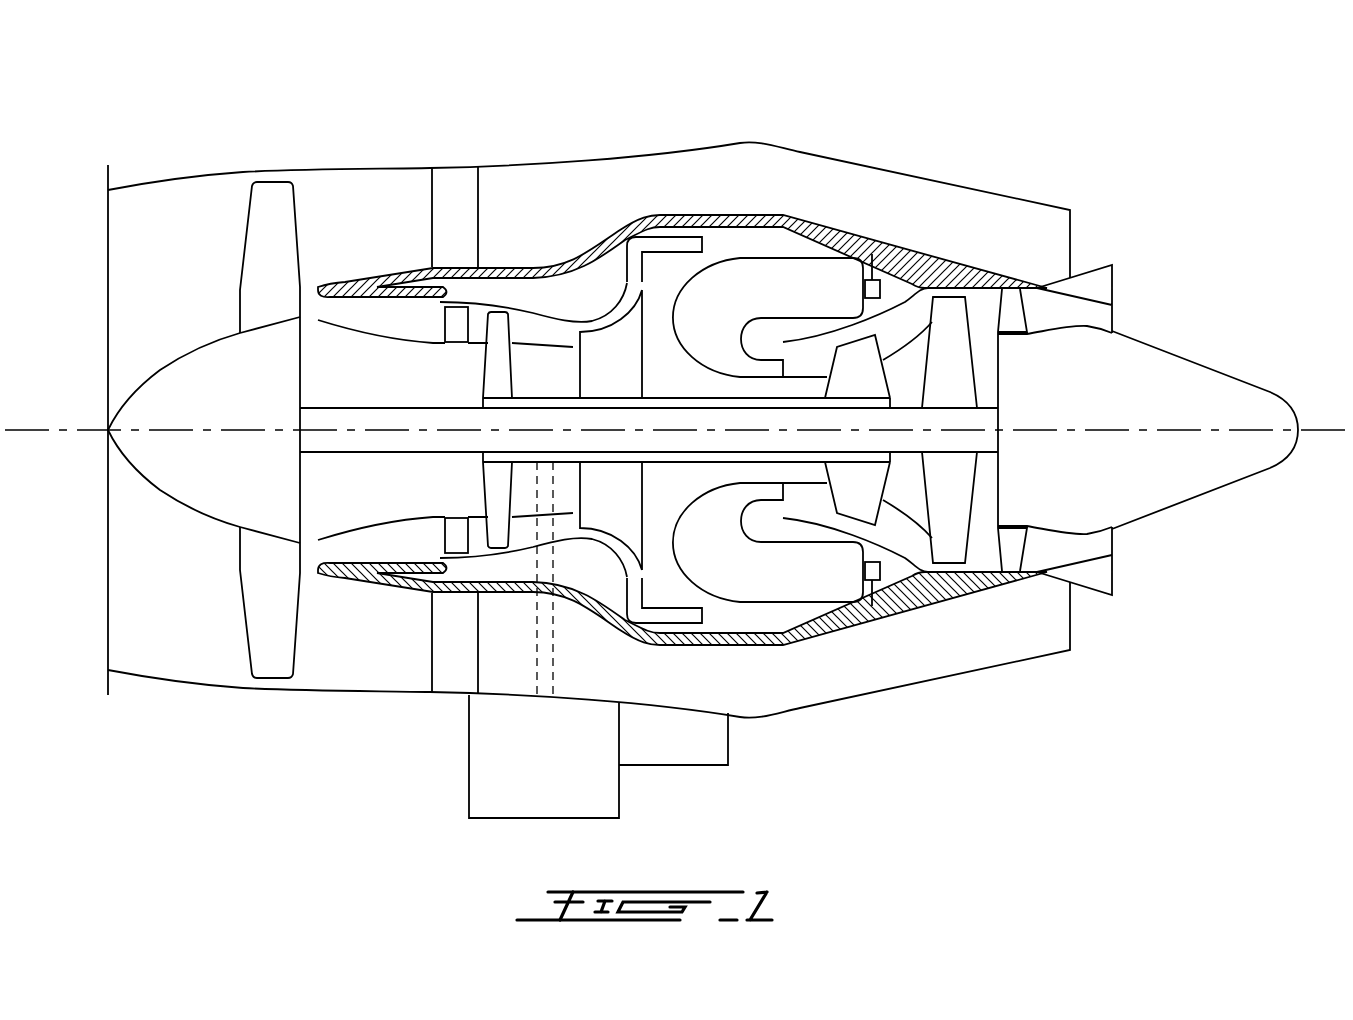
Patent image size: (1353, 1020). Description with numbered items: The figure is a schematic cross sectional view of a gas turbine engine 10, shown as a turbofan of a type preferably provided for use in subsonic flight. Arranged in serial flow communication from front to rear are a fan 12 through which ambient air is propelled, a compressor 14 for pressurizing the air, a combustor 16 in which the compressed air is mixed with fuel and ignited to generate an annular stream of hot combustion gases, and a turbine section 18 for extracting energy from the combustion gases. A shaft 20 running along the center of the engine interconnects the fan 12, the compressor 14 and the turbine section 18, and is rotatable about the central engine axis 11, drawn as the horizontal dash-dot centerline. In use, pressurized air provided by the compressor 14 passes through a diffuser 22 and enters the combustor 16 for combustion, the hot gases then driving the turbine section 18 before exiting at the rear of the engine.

The gas turbine engine 10 is at (908, 112).
The central engine axis 11 is at (1338, 432).
The fan 12 is at (265, 593).
The compressor 14 is at (535, 323).
The combustor 16 is at (765, 280).
The turbine section 18 is at (905, 500).
The shaft 20 is at (792, 458).
The diffuser 22 is at (653, 245).